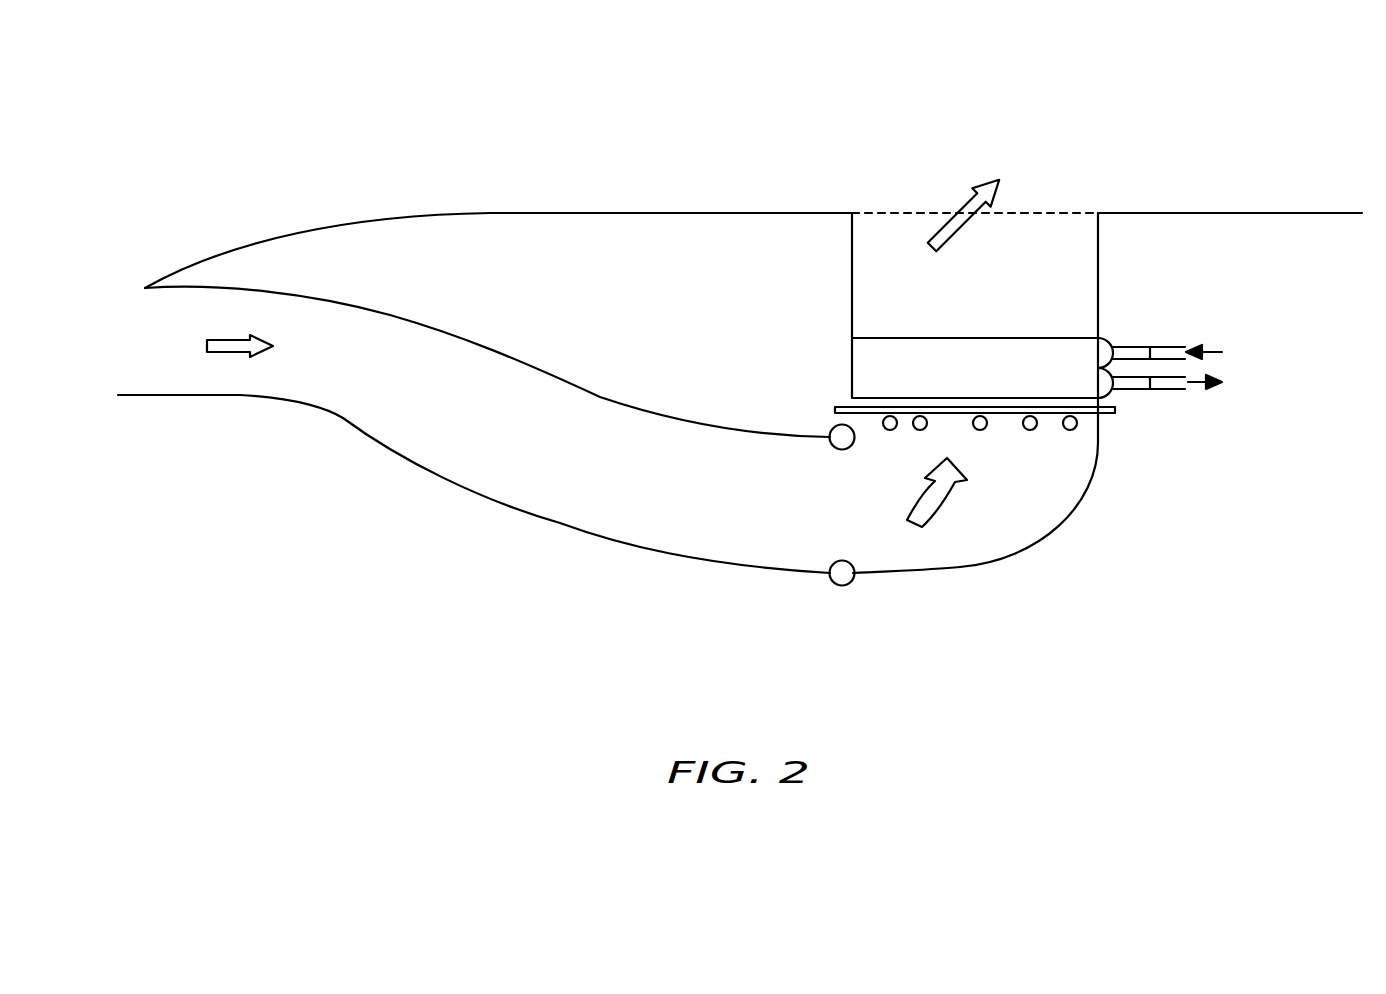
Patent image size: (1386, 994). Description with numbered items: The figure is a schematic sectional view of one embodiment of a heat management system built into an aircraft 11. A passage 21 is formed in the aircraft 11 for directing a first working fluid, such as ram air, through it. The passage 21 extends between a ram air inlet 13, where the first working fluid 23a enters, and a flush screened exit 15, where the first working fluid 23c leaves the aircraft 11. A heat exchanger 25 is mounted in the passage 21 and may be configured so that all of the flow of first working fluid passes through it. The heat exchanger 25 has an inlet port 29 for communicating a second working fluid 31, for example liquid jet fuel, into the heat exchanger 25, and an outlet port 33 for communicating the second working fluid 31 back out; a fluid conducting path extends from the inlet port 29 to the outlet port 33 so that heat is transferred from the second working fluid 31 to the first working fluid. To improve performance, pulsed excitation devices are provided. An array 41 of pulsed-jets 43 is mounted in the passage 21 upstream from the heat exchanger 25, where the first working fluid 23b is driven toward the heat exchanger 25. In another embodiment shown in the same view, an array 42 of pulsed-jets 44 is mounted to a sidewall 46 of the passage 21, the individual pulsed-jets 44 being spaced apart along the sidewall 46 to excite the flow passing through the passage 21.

The aircraft 11 is at (432, 101).
The inlet 13 is at (162, 325).
The outlet 15 is at (1038, 212).
The passage 21 is at (514, 447).
The inlet airflow 23a is at (213, 335).
The cooling airflow 23b is at (950, 510).
The exhaust airflow 23c is at (963, 200).
The heat exchanger 25 is at (1017, 338).
The inlet port 29 is at (1130, 345).
The second working fluid 31 is at (1215, 348).
The outlet port 33 is at (1137, 390).
The array of pulsed-jets 41 is at (878, 440).
The array of pulsed-jets 42 is at (808, 438).
The pulsed-jets 43 is at (1038, 425).
The pulsed-jets 44 is at (850, 450).
The sidewall 46 is at (675, 423).